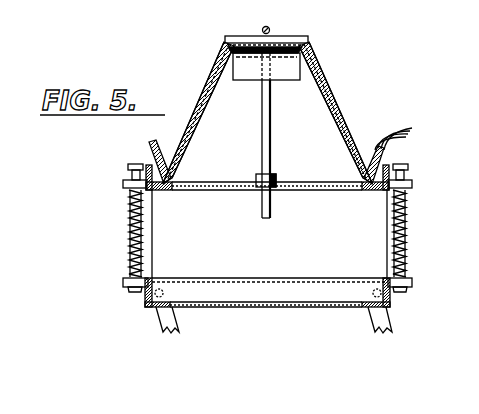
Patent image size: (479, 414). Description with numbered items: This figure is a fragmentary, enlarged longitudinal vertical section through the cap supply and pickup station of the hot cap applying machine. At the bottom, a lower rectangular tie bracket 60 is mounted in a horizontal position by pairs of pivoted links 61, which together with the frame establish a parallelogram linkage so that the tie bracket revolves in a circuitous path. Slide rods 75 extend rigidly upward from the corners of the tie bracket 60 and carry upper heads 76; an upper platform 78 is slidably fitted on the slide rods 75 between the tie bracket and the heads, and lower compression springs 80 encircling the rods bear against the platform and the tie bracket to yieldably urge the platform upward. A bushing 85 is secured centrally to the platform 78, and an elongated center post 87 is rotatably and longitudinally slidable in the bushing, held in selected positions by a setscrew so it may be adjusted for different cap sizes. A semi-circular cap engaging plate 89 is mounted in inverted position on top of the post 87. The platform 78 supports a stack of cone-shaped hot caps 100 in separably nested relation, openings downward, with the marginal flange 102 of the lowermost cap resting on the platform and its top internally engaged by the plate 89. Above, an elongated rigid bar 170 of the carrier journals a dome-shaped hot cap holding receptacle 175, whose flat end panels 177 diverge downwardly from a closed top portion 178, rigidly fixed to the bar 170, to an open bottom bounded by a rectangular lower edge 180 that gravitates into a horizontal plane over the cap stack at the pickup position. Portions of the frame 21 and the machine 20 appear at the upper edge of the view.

The conveyor 20 is at (476, 0).
The frame 21 is at (380, 0).
The tie bracket 60 is at (290, 290).
The links 61 is at (161, 322).
The slide rods 75 is at (130, 253).
The upper heads 76 is at (128, 167).
The platform 78 is at (155, 192).
The lower compression springs 80 is at (130, 233).
The bushing 85 is at (277, 178).
The center post 87 is at (261, 126).
The cap engaging plate 89 is at (256, 72).
The hot caps 100 is at (353, 125).
The marginal flange 102 is at (412, 131).
The bars 170 is at (262, 27).
The hot cap holding receptacles 175 is at (213, 47).
The end panels 177 is at (206, 80).
The closed top portion 178 is at (287, 42).
The rectangular edge 180 is at (168, 167).